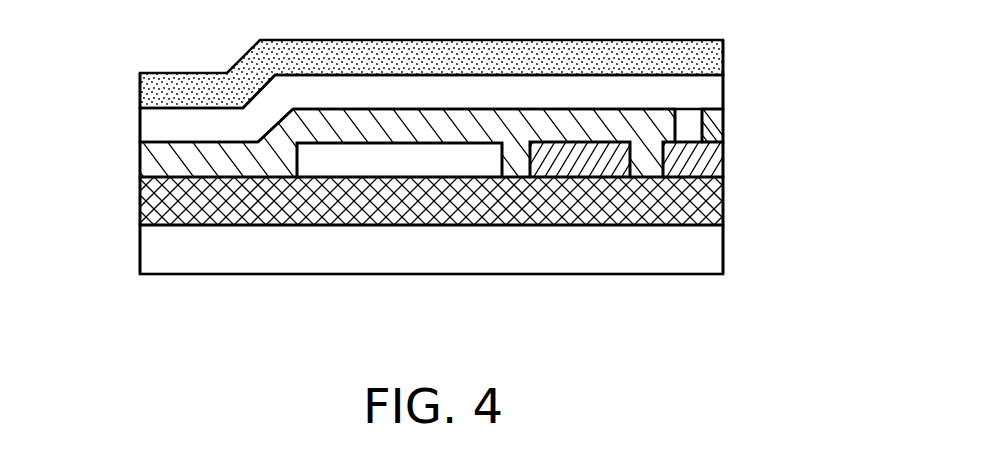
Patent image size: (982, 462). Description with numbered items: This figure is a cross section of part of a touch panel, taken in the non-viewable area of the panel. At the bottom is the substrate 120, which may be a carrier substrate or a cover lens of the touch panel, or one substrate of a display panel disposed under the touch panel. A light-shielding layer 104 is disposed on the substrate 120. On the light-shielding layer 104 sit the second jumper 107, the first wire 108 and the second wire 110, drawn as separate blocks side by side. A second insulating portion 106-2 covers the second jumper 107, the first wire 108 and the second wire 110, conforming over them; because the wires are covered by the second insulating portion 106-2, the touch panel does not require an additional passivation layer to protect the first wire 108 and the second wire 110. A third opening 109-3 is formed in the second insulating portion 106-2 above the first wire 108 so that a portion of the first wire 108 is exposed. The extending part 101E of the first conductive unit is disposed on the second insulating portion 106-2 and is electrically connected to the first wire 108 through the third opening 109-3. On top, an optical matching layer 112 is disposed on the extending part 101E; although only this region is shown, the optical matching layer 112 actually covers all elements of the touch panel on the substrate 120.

The optical matching layer 112 is at (140, 93).
The extending part of the first conductive unit 101E is at (142, 125).
The second insulating portion 106-2 is at (142, 157).
The light-shielding layer 104 is at (142, 197).
The substrate 120 is at (142, 246).
The second jumper 107 is at (402, 163).
The second wire 110 is at (587, 165).
The first wire 108 is at (723, 155).
The third opening 109-3 is at (690, 134).